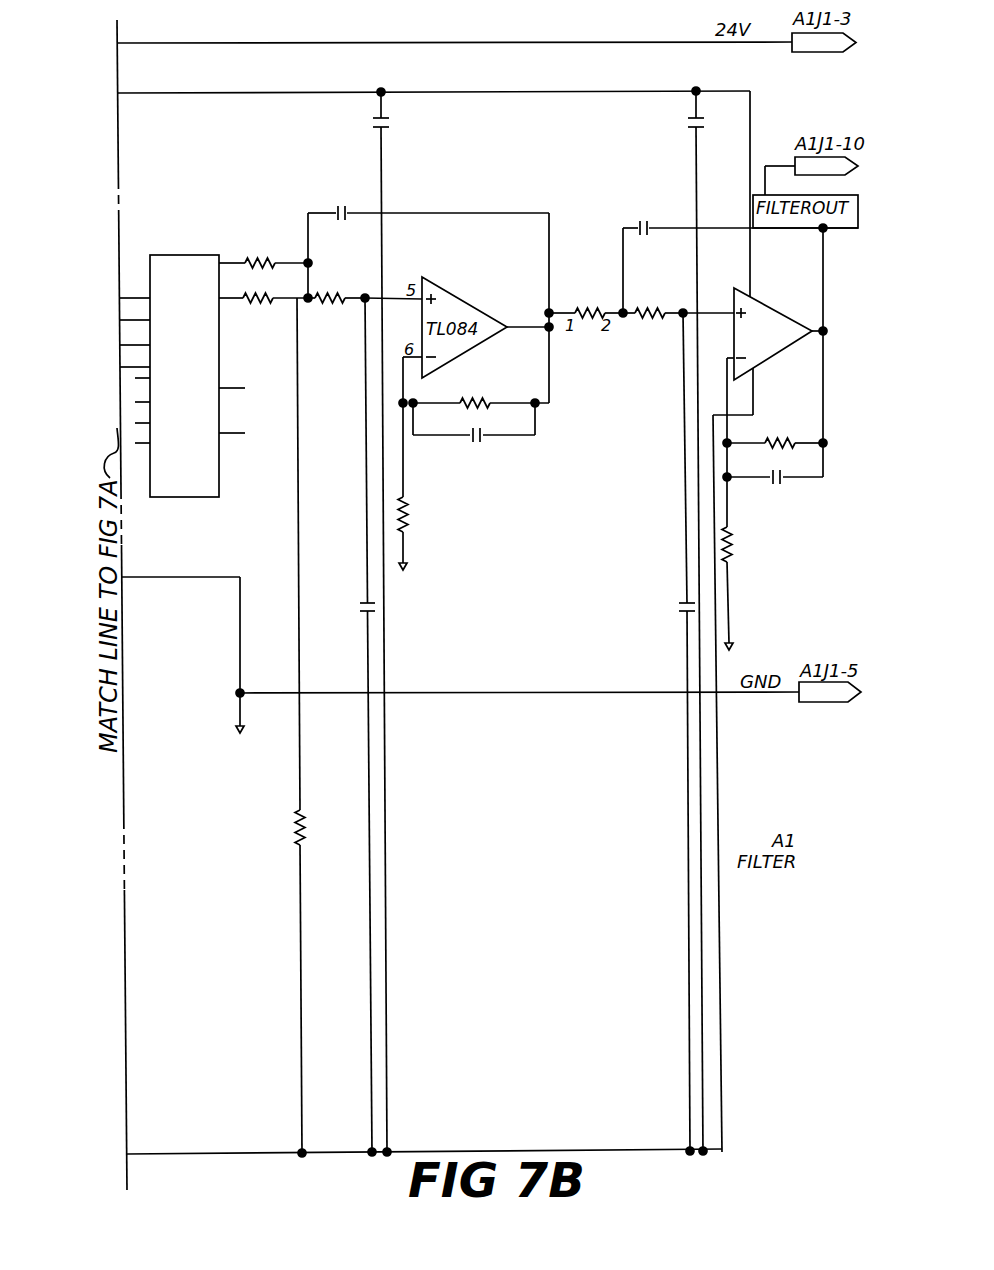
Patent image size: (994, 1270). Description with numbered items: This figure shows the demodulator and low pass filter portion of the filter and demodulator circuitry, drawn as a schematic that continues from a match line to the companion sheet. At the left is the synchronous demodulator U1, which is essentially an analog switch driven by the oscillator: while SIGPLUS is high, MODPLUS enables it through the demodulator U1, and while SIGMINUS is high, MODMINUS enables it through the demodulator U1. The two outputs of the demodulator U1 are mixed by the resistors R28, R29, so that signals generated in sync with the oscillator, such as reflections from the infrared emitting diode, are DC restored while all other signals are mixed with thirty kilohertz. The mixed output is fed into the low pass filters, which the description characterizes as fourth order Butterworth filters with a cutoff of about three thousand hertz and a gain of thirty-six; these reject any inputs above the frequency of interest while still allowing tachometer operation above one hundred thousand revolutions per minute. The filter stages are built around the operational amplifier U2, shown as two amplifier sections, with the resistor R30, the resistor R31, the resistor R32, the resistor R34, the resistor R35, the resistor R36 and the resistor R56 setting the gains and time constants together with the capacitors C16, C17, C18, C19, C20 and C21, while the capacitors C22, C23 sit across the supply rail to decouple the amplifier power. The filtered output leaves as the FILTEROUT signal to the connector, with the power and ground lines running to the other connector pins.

The synchronous demodulator U1 is at (182, 377).
The TL084 operational amplifier U2 is at (770, 348).
The mixing resistor R28 is at (263, 231).
The mixing resistor R29 is at (263, 355).
The resistor 62K R30 is at (336, 289).
The resistor 100K R31 is at (433, 486).
The resistor 510K R32 is at (506, 405).
The resistor 82K R34 is at (653, 300).
The resistor 120K R35 is at (766, 504).
The resistor 560 R36 is at (797, 440).
The resistor 1M R56 is at (325, 826).
The capacitor 1000PF C16 is at (383, 228).
The capacitor 2000PF C17 is at (341, 727).
The capacitor 680PF C18 is at (483, 454).
The capacitor 1000PF C19 is at (691, 242).
The capacitor 2000PF C20 is at (600, 734).
The capacitor 680PF C21 is at (799, 506).
The capacitor 0.1uF C22 is at (317, 622).
The capacitor 0.1uF C23 is at (627, 621).